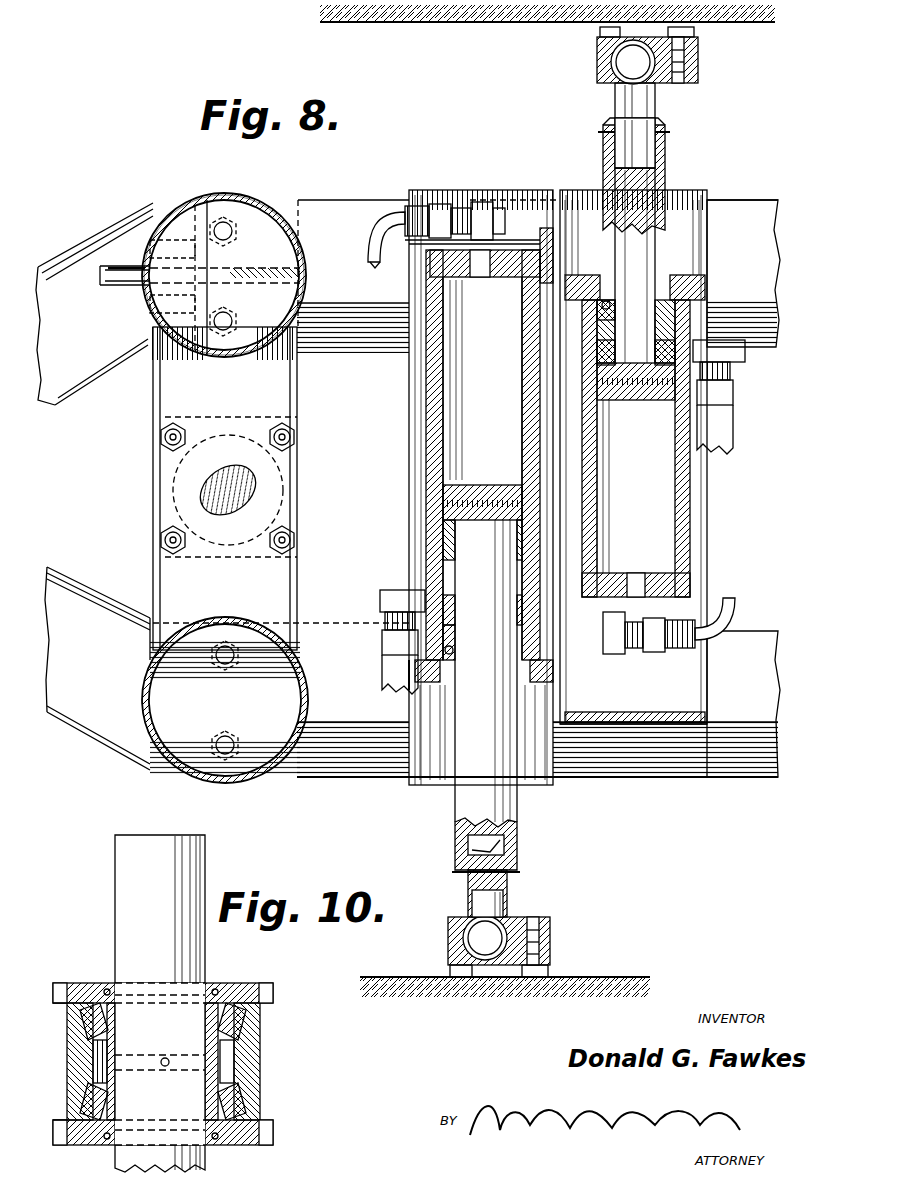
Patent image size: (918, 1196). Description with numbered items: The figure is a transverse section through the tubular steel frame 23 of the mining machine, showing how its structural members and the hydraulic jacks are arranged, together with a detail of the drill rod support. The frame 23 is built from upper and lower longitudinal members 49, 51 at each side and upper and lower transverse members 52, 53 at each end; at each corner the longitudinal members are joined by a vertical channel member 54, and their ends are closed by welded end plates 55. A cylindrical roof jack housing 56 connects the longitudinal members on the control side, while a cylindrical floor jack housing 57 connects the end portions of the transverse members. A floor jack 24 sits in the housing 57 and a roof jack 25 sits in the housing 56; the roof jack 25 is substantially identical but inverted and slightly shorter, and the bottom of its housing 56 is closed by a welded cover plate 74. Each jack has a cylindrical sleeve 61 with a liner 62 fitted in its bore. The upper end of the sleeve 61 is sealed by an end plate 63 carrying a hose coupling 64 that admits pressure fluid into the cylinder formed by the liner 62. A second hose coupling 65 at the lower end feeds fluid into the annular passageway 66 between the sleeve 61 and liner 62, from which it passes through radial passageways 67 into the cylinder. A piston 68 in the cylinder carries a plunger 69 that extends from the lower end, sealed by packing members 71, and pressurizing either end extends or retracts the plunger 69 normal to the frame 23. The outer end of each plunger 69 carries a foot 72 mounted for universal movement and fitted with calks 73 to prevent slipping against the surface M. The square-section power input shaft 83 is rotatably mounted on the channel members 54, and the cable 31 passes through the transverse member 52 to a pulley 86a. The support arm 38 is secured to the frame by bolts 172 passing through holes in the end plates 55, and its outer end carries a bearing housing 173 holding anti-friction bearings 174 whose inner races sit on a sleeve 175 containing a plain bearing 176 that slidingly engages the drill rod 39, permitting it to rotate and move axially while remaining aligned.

In FIG. 8, the tubular steel frame 23 is at (362, 200).
In FIG. 8, the floor jack 24 is at (422, 430).
In FIG. 8, the roof jack 25 is at (700, 500).
In FIG. 8, the cable 31 is at (100, 276).
In FIG. 8, the support arm 38 is at (86, 370).
In FIG. 10, the support arm 38 is at (66, 1062).
In FIG. 10, the drill rod 39 is at (206, 872).
In FIG. 8, the upper longitudinal member 49 is at (250, 200).
In FIG. 8, the lower longitudinal member 51 is at (235, 782).
In FIG. 8, the upper transverse member 52 is at (320, 200).
In FIG. 8, the lower transverse member 53 is at (358, 770).
In FIG. 8, the vertical channel member 54 is at (298, 518).
In FIG. 8, the end plate 55 is at (305, 285).
In FIG. 8, the roof jack housing 56 is at (709, 520).
In FIG. 8, the floor jack housing 57 is at (412, 490).
In FIG. 8, the cylindrical sleeve 61 is at (430, 380).
In FIG. 8, the liner 62 is at (445, 540).
In FIG. 8, the end plate 63 is at (440, 266).
In FIG. 8, the hose coupling 64 is at (476, 205).
In FIG. 8, the second hose coupling 65 is at (380, 598).
In FIG. 8, the annular passageway 66 is at (456, 612).
In FIG. 8, the radial passageways 67 is at (450, 618).
In FIG. 8, the piston 68 is at (488, 486).
In FIG. 8, the plunger 69 is at (665, 170).
In FIG. 8, the packing members 71 is at (458, 652).
In FIG. 8, the foot 72 is at (698, 76).
In FIG. 8, the calks 73 is at (600, 33).
In FIG. 8, the cover plate 74 is at (676, 722).
In FIG. 8, the power input shaft 83 is at (250, 488).
In FIG. 8, the pulley 86a is at (120, 292).
In FIG. 8, the bolts 172 is at (238, 236).
In FIG. 10, the bearing housing 173 is at (235, 985).
In FIG. 10, the anti-friction bearings 174 is at (240, 1030).
In FIG. 10, the sleeve 175 is at (238, 1055).
In FIG. 10, the plain bearing 176 is at (116, 1042).
In FIG. 8, the ground surface M is at (470, 24).